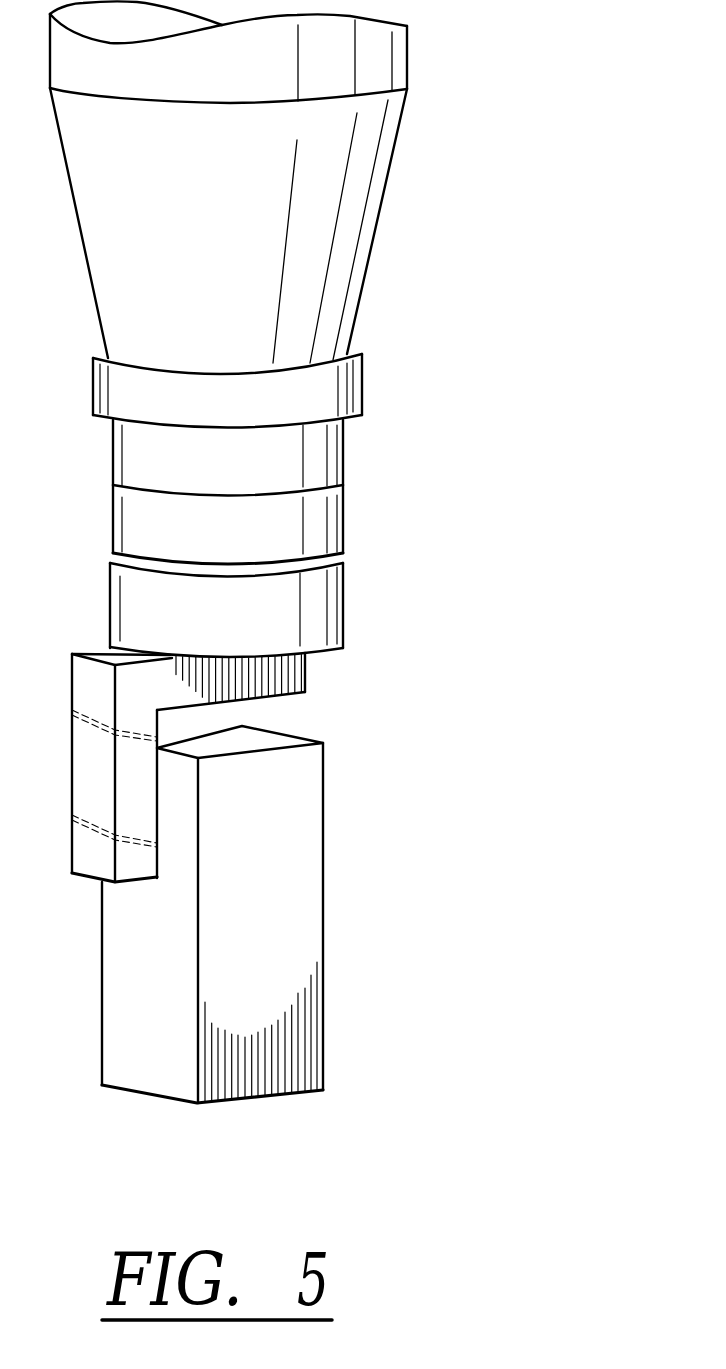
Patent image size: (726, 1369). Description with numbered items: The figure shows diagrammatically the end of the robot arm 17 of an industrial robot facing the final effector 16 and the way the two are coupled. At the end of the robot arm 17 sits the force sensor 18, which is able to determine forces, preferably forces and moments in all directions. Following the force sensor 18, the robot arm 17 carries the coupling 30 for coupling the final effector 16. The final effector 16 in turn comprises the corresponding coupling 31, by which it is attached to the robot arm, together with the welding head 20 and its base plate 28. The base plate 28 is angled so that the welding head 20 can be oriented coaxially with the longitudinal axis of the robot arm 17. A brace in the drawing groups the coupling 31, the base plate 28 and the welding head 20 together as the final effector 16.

The robot arm 17 is at (219, 229).
The force sensor 18 is at (209, 478).
The coupling 30 is at (209, 548).
The coupling 31 is at (313, 632).
The base plate 28 is at (287, 682).
The welding head 20 is at (277, 914).
The final effector 16 is at (327, 833).